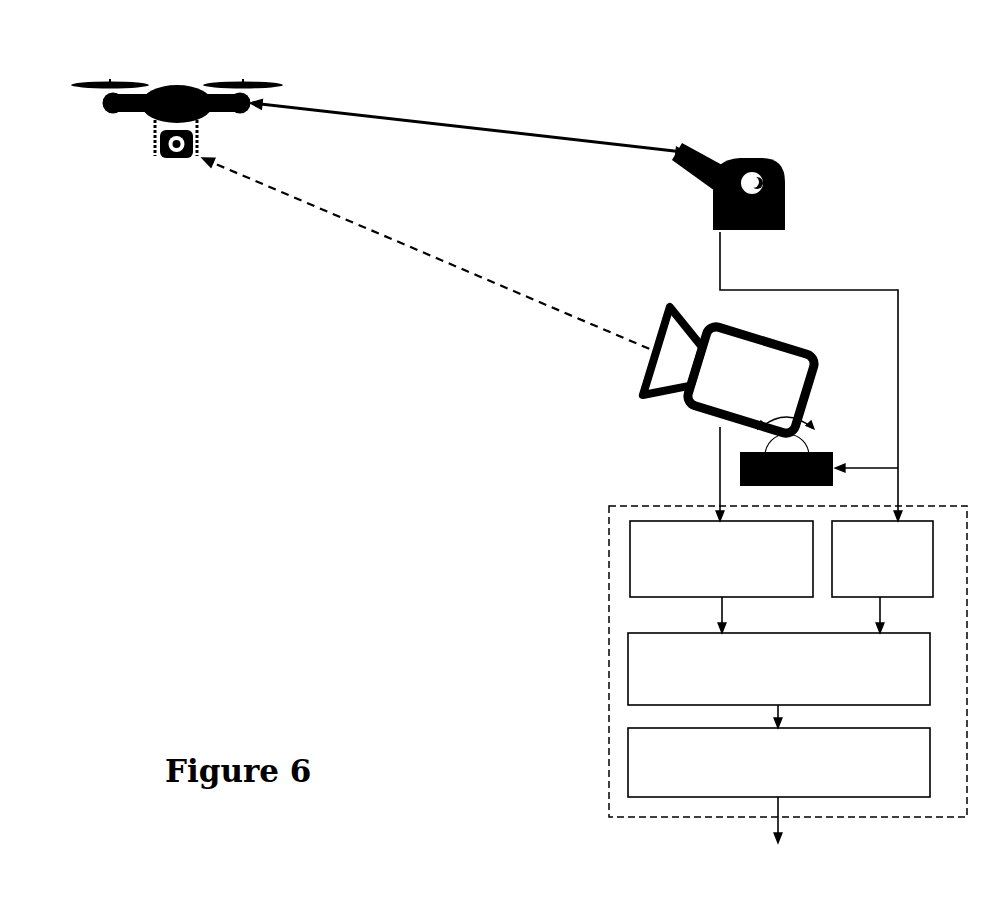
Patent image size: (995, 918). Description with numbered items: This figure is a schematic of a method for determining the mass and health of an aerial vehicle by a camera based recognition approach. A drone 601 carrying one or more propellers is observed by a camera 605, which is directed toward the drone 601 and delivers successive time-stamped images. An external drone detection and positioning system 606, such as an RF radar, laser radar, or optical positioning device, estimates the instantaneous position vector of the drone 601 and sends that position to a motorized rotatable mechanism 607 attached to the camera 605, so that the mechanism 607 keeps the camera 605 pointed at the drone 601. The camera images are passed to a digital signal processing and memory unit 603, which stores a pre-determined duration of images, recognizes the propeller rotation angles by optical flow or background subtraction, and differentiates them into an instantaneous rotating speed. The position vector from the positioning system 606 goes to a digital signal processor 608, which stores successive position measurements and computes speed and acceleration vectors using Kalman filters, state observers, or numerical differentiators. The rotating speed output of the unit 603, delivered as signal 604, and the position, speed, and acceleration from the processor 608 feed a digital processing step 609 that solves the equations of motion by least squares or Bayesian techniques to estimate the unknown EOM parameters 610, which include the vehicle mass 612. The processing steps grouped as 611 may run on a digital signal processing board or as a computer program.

The drone 601 is at (158, 93).
The digital signal processing and memory unit 603 is at (721, 559).
The image data signal 604 is at (718, 611).
The camera 605 is at (730, 392).
The external drone detection and positioning system 606 is at (762, 156).
The motorized 3D rotatable mechanism 607 is at (786, 469).
The digital signal processor 608 is at (882, 559).
The digital processing step 609 is at (779, 669).
The unknown EOM parameters 610 is at (779, 762).
The processing steps 611 is at (600, 545).
The vehicle mass 612 is at (778, 838).